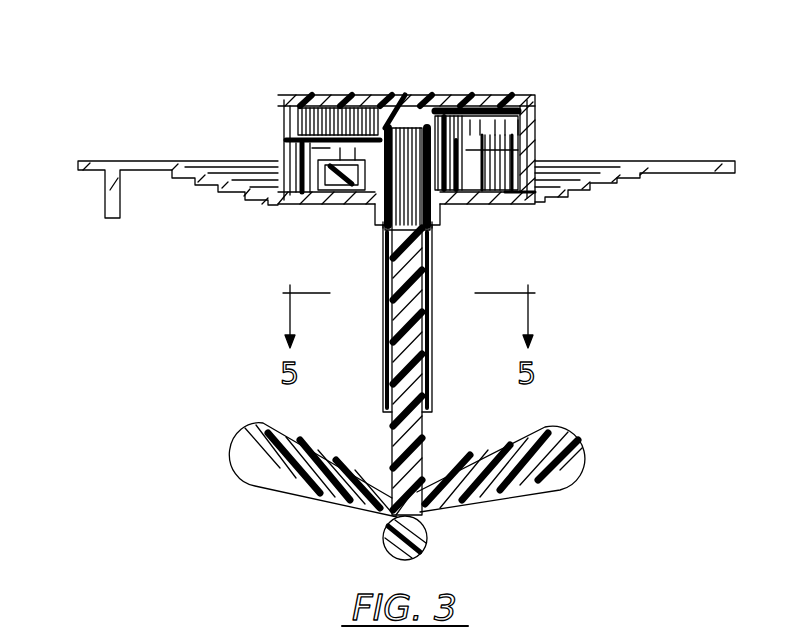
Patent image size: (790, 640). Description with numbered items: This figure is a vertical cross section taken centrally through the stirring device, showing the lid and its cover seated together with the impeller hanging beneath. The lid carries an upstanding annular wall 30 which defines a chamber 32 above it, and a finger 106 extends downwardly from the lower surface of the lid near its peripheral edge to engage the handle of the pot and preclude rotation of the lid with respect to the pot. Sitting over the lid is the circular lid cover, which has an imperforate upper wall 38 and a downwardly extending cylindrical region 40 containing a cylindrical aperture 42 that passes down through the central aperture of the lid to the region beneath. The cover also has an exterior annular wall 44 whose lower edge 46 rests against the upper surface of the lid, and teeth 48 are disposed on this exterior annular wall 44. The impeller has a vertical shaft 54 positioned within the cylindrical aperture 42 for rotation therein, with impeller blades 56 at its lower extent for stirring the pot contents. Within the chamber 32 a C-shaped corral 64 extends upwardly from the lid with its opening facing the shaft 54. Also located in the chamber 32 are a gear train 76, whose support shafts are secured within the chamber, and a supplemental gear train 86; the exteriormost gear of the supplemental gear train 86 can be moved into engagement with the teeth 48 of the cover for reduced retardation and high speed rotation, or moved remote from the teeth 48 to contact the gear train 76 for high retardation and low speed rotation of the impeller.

The upstanding annular wall 30 is at (520, 147).
The chamber 32 is at (268, 132).
The imperforate upper wall 38 is at (385, 93).
The downwardly extending cylindrical region 40 is at (386, 225).
The cylindrical aperture 42 is at (386, 350).
The exterior annular wall 44 is at (535, 127).
The lower edge 46 is at (525, 198).
The teeth 48 is at (307, 93).
The vertical shaft 54 is at (407, 353).
The impeller blades 56 is at (240, 457).
The C-shaped corral 64 is at (300, 185).
The gear train 76 is at (442, 182).
The supplemental gear train 86 is at (468, 113).
The finger 106 is at (106, 213).